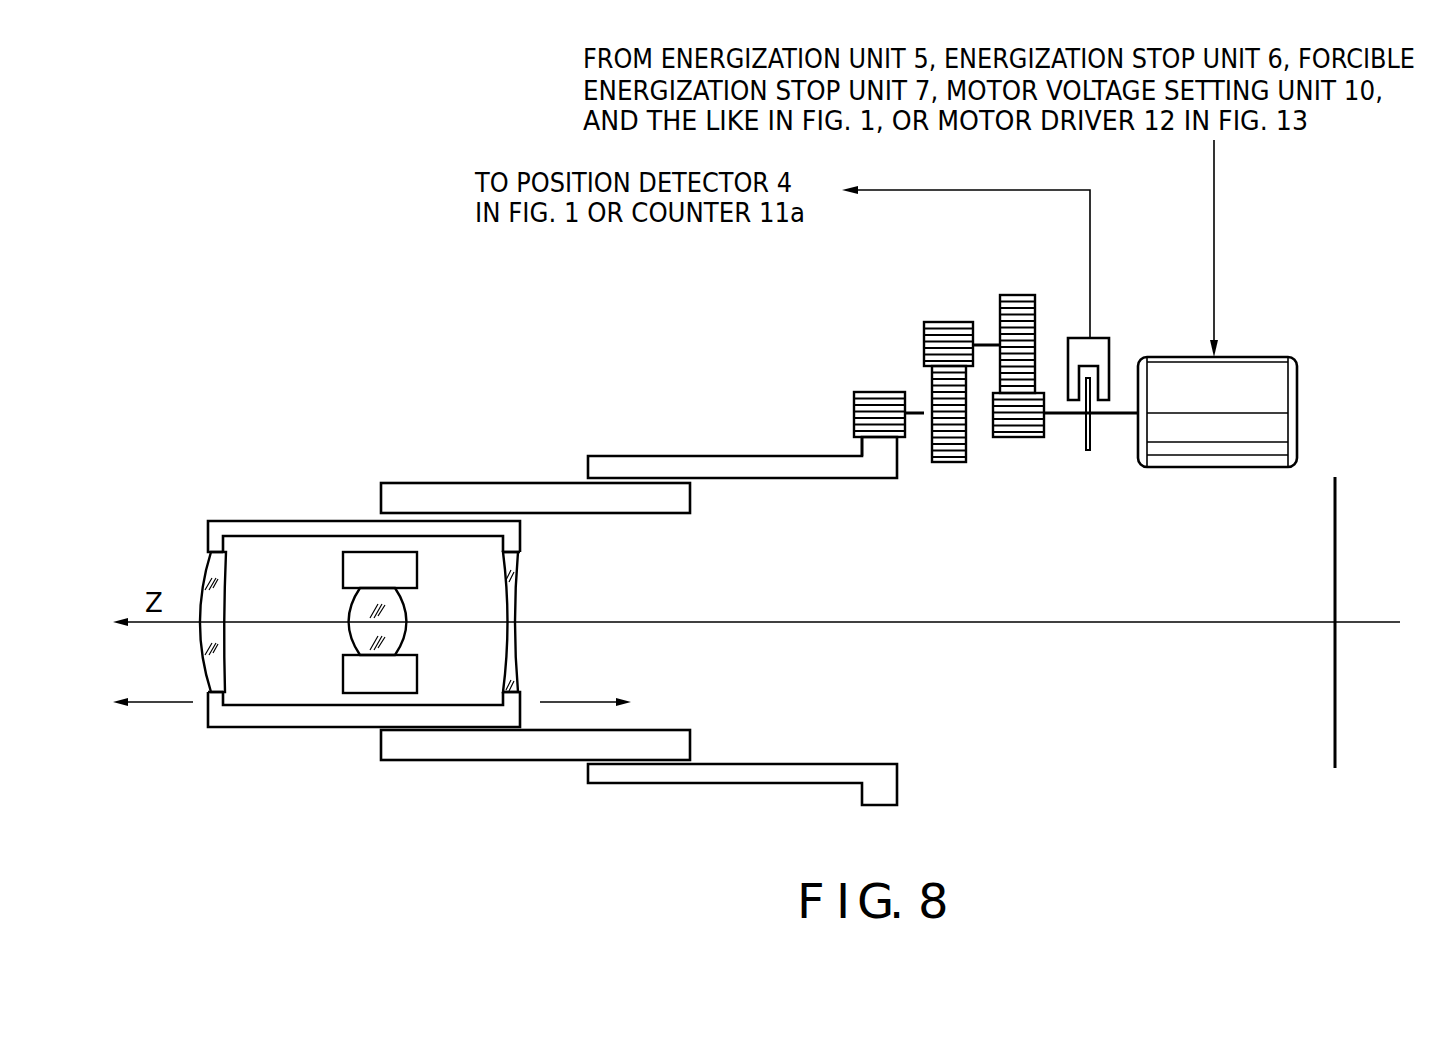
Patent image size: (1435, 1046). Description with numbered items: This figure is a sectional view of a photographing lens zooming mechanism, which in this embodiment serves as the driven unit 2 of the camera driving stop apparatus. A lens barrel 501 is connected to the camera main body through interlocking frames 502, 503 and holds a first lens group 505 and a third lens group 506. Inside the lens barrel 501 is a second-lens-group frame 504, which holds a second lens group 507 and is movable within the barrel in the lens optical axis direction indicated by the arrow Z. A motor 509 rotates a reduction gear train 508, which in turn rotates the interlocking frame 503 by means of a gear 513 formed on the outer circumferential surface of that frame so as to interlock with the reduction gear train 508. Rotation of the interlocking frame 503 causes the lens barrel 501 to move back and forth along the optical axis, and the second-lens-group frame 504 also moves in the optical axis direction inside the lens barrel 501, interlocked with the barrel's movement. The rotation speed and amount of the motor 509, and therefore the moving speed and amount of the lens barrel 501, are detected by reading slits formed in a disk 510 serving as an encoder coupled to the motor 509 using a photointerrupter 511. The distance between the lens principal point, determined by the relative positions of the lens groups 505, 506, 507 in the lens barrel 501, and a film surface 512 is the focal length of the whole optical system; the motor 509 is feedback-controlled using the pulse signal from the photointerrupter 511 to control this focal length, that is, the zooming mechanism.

The driven unit 2 is at (524, 802).
The lens barrel 501 is at (250, 521).
The interlocking frame 502 is at (452, 483).
The interlocking frame 503 is at (655, 456).
The second-lens-group frame 504 is at (343, 676).
The first lens group 505 is at (223, 640).
The third lens group 506 is at (520, 599).
The second lens group 507 is at (352, 607).
The reduction gear train 508 is at (873, 392).
The motor 509 is at (1253, 357).
The disk 510 is at (1086, 430).
The photointerrupter 511 is at (1100, 338).
The film surface 512 is at (1335, 708).
The gear 513 is at (861, 447).